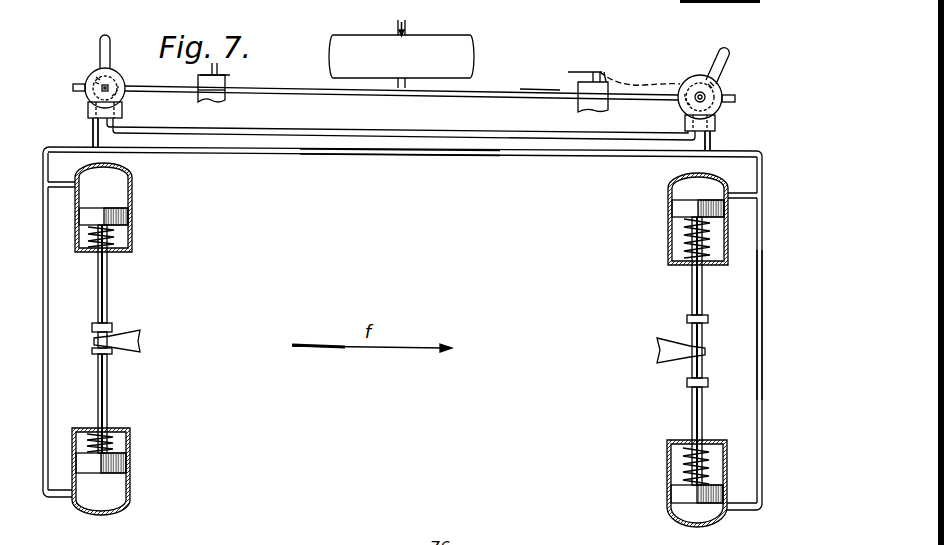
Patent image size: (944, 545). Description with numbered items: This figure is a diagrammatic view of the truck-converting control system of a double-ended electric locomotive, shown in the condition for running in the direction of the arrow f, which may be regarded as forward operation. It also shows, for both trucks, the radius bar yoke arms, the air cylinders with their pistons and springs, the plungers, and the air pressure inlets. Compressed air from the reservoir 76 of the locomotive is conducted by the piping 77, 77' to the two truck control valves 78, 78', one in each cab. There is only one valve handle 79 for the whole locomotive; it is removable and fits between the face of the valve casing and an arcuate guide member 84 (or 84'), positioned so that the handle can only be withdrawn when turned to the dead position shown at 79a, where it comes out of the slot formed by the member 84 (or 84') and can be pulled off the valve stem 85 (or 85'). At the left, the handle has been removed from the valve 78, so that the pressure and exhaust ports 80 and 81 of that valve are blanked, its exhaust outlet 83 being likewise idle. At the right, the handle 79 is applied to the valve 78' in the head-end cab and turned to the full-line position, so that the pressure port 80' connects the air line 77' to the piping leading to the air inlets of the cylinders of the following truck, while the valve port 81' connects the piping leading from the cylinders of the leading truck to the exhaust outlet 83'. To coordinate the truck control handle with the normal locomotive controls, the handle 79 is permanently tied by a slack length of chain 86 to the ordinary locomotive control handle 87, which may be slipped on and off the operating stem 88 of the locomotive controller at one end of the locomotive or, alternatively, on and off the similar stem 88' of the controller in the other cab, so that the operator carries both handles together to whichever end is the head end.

The compressed air reservoir 76 is at (455, 45).
The piping 77 is at (401, 80).
The piping 77' is at (541, 78).
The truck control valve 78 is at (67, 93).
The truck control valve 78' is at (699, 84).
The valve handle 79 is at (725, 57).
The dead position 79a is at (102, 38).
The pressure port 80 is at (140, 102).
The pressure port 80' is at (670, 110).
The exhaust port 81 is at (80, 127).
The valve port 81' is at (734, 132).
The exhaust outlet 83 is at (54, 79).
The exhaust outlet 83' is at (757, 99).
The arcuate guide member 84 is at (73, 71).
The arcuate guide member 84' is at (733, 91).
The valve stem 85 is at (122, 66).
The valve stem 85' is at (674, 79).
The slack length of chain 86 is at (628, 78).
The locomotive control handle 87 is at (578, 72).
The operating stem 88 is at (230, 81).
The operating stem 88' is at (624, 97).